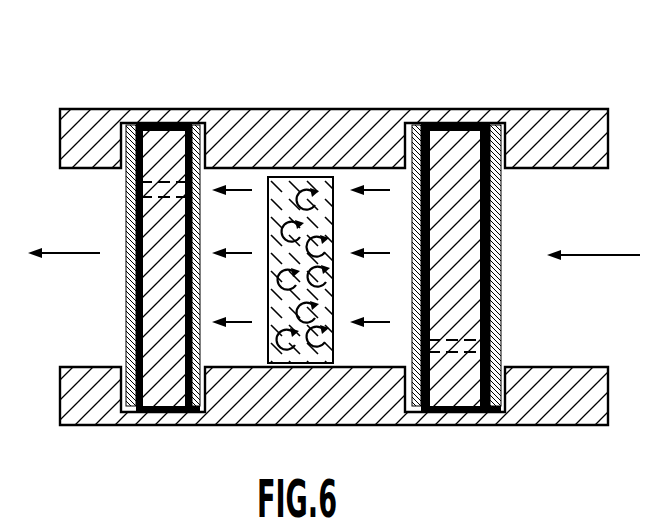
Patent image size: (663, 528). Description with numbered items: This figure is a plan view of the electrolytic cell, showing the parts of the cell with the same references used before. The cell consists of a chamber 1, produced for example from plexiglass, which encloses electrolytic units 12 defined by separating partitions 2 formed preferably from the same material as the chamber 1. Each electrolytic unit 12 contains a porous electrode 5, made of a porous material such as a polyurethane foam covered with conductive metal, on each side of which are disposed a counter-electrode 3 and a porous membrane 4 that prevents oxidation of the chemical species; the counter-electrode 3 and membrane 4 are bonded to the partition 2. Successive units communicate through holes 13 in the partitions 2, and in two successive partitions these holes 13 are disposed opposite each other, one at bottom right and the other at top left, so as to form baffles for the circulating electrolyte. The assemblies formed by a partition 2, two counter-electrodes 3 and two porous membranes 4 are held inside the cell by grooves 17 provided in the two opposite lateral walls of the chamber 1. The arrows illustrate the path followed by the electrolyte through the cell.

The chamber 1 is at (558, 135).
The partition 2 is at (160, 137).
The counter-electrode 3 is at (140, 128).
The porous membrane 4 is at (127, 125).
The porous electrode 5 is at (292, 183).
The electrolytic unit 12 is at (258, 185).
The hole 13 is at (125, 184).
The groove 17 is at (501, 400).